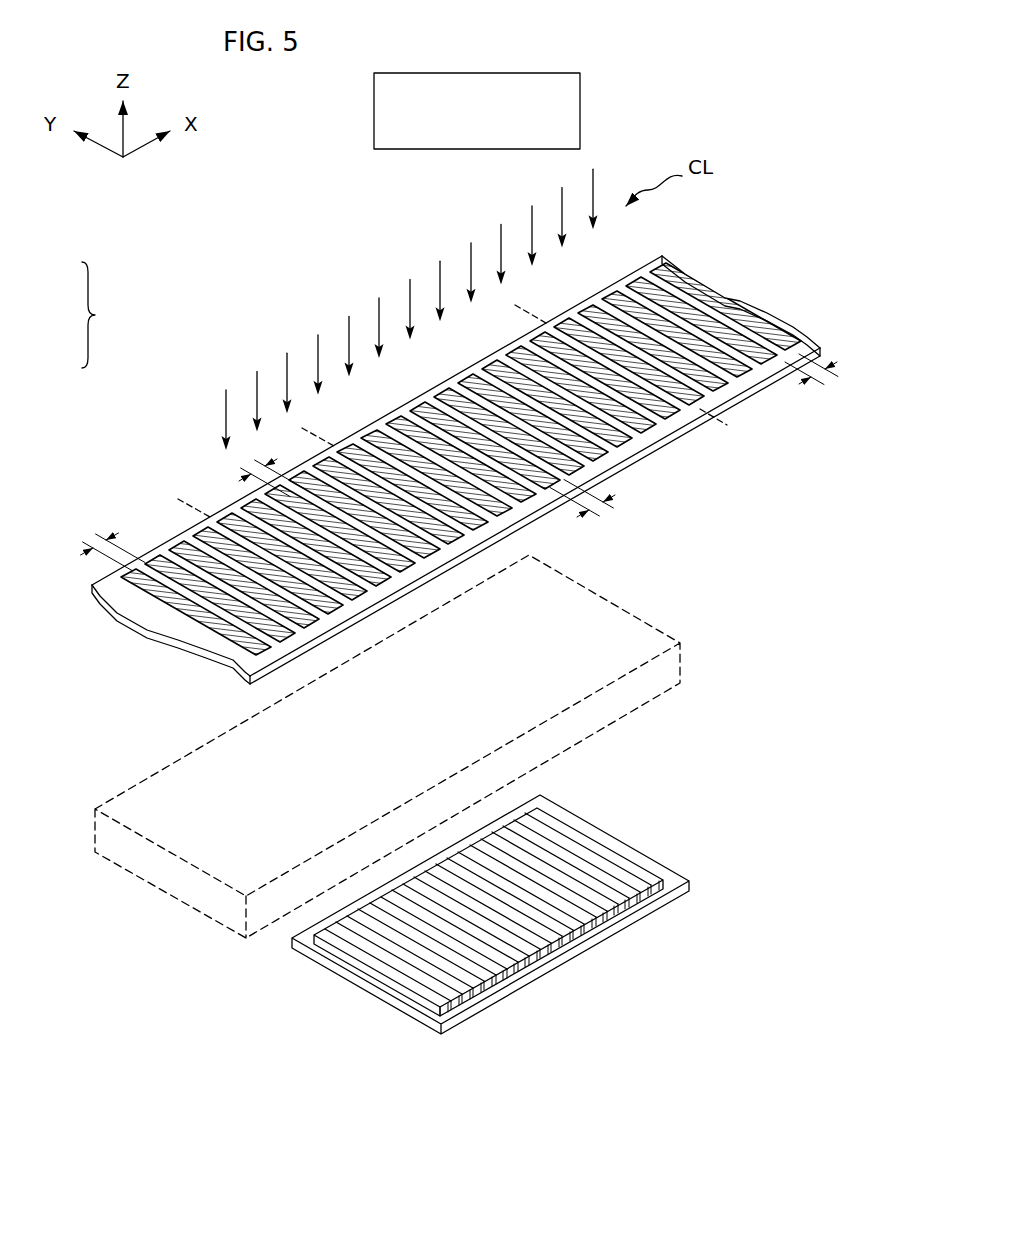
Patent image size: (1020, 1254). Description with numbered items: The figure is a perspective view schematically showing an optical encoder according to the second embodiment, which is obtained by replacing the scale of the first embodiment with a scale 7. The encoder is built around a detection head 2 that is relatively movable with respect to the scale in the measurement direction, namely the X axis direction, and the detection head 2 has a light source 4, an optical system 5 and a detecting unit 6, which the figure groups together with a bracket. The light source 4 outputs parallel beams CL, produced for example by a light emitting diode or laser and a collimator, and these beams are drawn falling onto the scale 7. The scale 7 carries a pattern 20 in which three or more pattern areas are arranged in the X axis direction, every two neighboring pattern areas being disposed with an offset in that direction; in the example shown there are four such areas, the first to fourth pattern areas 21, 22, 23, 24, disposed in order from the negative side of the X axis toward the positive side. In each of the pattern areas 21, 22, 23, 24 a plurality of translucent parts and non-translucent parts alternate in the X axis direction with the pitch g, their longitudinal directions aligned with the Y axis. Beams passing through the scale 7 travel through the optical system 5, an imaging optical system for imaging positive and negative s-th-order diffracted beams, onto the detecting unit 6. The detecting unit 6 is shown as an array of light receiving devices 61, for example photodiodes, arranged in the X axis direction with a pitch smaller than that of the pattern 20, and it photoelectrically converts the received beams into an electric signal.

The detection head 2 is at (90, 315).
The light source 4 is at (580, 98).
The optical system 5 is at (683, 650).
The detecting unit 6 is at (355, 1000).
The scale 7 is at (676, 268).
The pattern 20 is at (108, 688).
The first pattern area 21 is at (764, 402).
The second pattern area 22 is at (652, 471).
The third pattern area 23 is at (222, 490).
The fourth pattern area 24 is at (166, 520).
The light receiving devices 61 is at (616, 846).